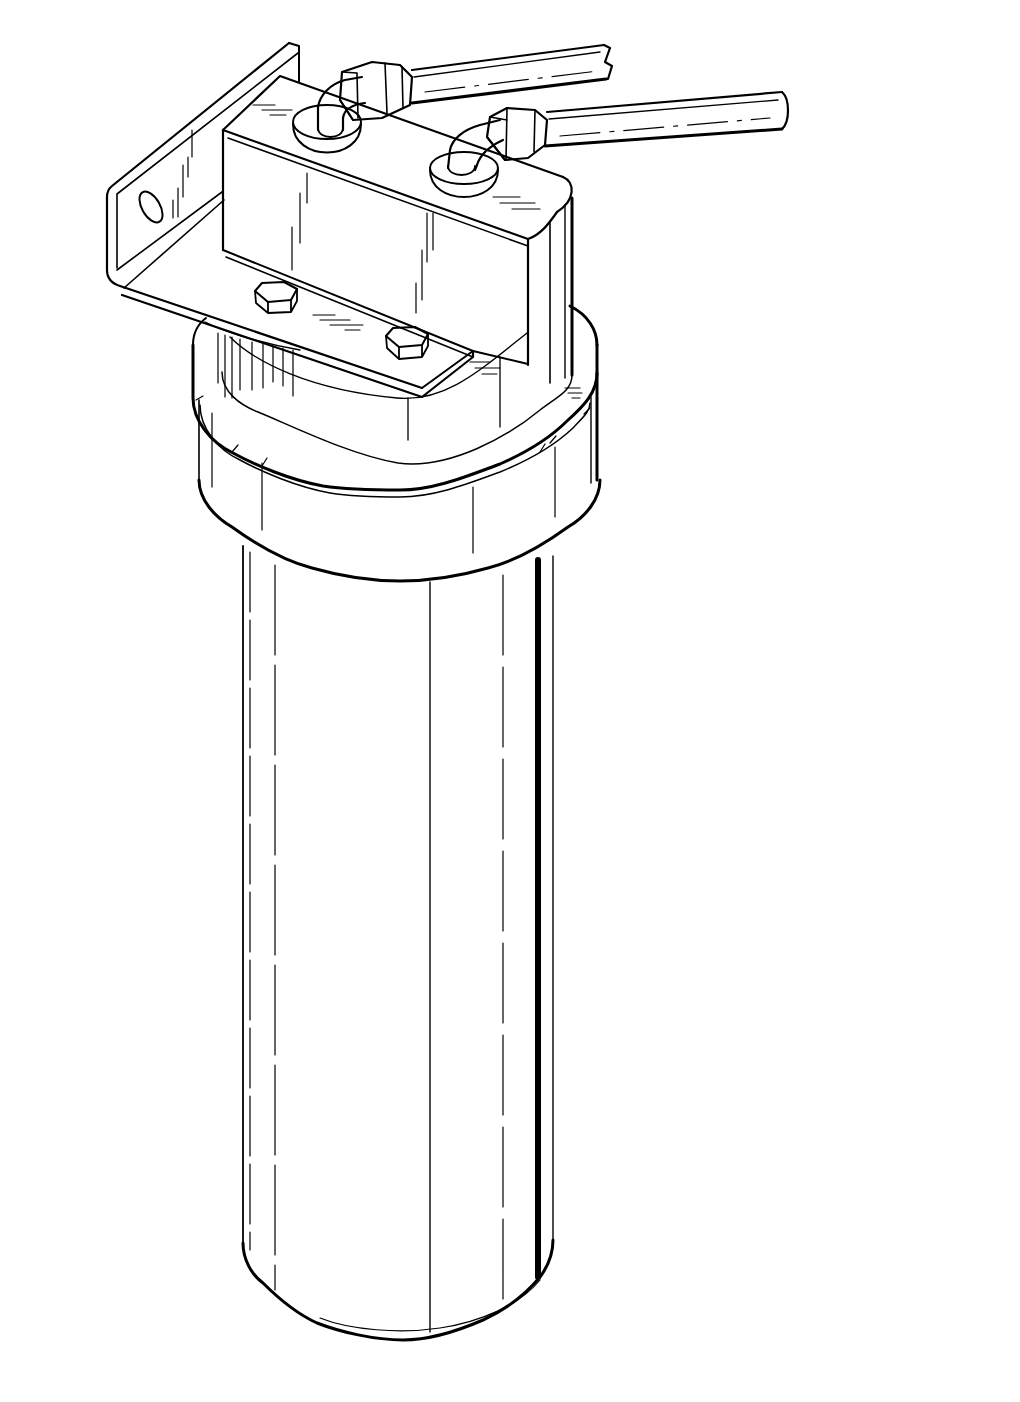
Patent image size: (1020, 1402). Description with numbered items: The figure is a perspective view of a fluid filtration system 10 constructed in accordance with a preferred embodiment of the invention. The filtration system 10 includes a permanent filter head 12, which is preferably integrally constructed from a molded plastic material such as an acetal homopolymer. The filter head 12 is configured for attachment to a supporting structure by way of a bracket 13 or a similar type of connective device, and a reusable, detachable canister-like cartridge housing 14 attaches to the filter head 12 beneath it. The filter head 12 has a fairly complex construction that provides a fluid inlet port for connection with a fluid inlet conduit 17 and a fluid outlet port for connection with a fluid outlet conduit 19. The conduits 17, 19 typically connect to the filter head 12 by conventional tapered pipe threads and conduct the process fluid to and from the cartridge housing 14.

The fluid filtration system 10 is at (167, 699).
The filter head 12 is at (598, 437).
The bracket 13 is at (172, 283).
The cartridge housing 14 is at (525, 800).
The fluid inlet conduit 17 is at (687, 117).
The fluid outlet conduit 19 is at (602, 52).